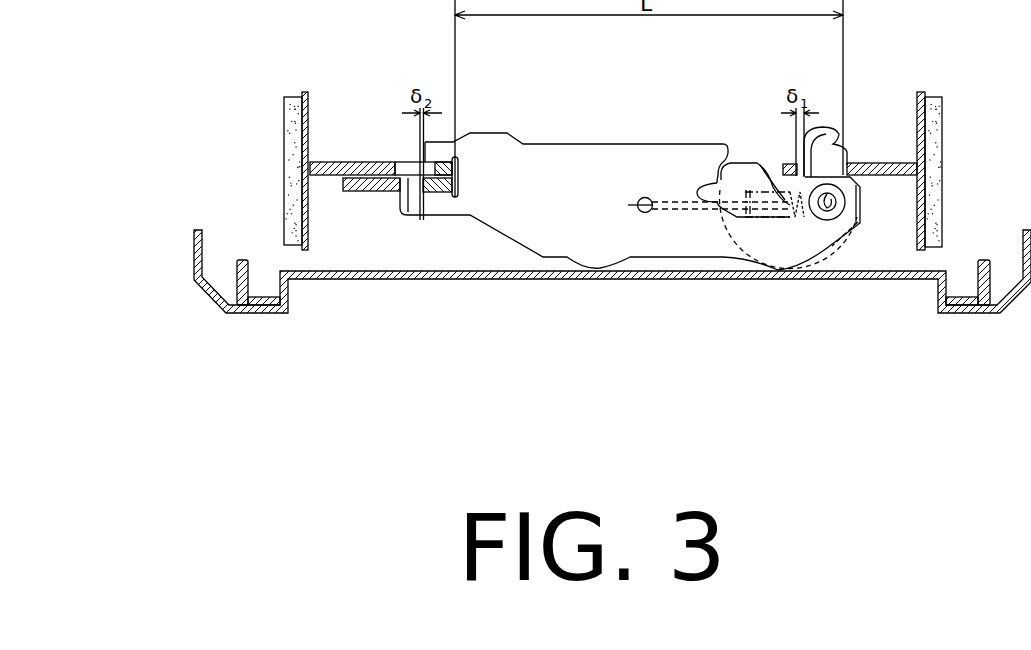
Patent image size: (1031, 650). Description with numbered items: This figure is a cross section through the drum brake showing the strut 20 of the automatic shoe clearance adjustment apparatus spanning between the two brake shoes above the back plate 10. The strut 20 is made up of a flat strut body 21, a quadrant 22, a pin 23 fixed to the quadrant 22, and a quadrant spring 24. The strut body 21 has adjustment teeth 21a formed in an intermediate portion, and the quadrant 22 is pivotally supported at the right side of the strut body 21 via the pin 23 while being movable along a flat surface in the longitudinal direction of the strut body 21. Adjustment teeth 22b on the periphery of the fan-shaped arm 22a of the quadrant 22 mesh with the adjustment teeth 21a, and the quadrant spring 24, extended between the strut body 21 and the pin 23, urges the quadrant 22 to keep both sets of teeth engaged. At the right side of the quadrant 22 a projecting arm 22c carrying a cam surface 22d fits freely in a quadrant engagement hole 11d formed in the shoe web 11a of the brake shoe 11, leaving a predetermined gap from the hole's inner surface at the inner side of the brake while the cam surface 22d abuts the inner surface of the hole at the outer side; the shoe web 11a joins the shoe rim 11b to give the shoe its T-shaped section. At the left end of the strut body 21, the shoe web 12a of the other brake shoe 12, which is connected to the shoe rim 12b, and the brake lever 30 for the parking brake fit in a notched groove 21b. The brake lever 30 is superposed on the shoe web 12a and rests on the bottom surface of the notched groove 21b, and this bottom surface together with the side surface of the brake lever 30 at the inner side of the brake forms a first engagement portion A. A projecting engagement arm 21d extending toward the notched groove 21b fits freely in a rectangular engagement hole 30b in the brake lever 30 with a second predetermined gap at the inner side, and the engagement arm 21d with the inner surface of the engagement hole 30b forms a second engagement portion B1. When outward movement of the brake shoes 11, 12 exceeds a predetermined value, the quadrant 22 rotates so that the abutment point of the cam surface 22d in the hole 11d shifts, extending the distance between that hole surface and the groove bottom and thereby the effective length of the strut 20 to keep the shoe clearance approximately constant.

The back plate 10 is at (547, 294).
The brake shoe 11 is at (957, 140).
The shoe web 11a is at (887, 163).
The shoe rim 11b is at (921, 92).
The quadrant engagement hole 11d is at (790, 163).
The brake shoe 12 is at (271, 138).
The shoe web 12a is at (352, 160).
The shoe rim 12b is at (304, 92).
The strut 20 is at (600, 132).
The strut body 21 is at (545, 148).
The adjustment teeth 21a is at (748, 170).
The notched groove 21b is at (430, 142).
The engagement arm 21d is at (415, 187).
The quadrant 22 is at (797, 253).
The fan-shaped arm 22a is at (760, 165).
The adjustment teeth 22b is at (713, 195).
The projecting arm 22c is at (836, 134).
The cam surface 22d is at (858, 178).
The pin 23 is at (837, 215).
The quadrant spring 24 is at (730, 250).
The brake lever 30 is at (362, 192).
The engagement hole 30b is at (412, 188).
The first engagement portion A is at (471, 190).
The second engagement portion B1 is at (422, 195).